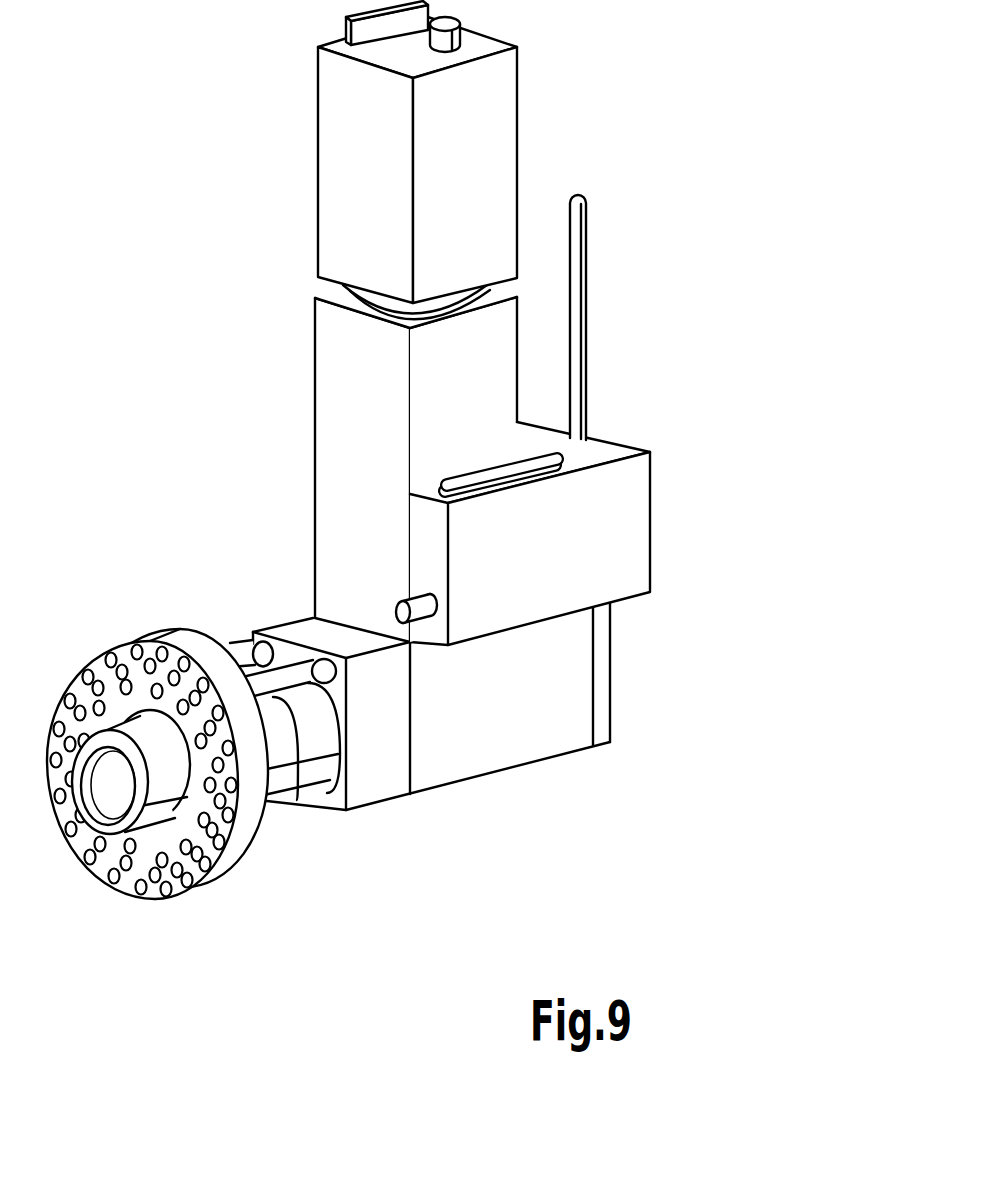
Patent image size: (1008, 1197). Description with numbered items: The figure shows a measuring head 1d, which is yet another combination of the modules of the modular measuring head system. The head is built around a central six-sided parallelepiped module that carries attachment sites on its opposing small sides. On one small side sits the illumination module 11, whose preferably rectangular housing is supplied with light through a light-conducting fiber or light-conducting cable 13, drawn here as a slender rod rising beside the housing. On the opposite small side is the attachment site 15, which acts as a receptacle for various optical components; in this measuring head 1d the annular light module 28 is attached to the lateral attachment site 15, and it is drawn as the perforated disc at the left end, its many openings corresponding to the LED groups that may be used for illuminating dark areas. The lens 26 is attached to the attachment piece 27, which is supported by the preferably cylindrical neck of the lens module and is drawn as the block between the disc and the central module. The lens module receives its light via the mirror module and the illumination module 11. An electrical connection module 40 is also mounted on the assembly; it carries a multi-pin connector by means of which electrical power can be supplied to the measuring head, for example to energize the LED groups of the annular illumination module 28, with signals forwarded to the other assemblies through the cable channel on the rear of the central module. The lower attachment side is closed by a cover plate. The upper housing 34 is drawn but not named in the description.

The measuring head 1d is at (469, 577).
The illumination module 11 is at (604, 671).
The light-conducting cable 13 is at (578, 254).
The attachment site 15 is at (298, 603).
The lens module 26 is at (300, 798).
The attachment piece 27 is at (522, 791).
The annular illumination module 28 is at (227, 855).
The motor housing 34 is at (488, 128).
The electrical connection module 40 is at (622, 509).